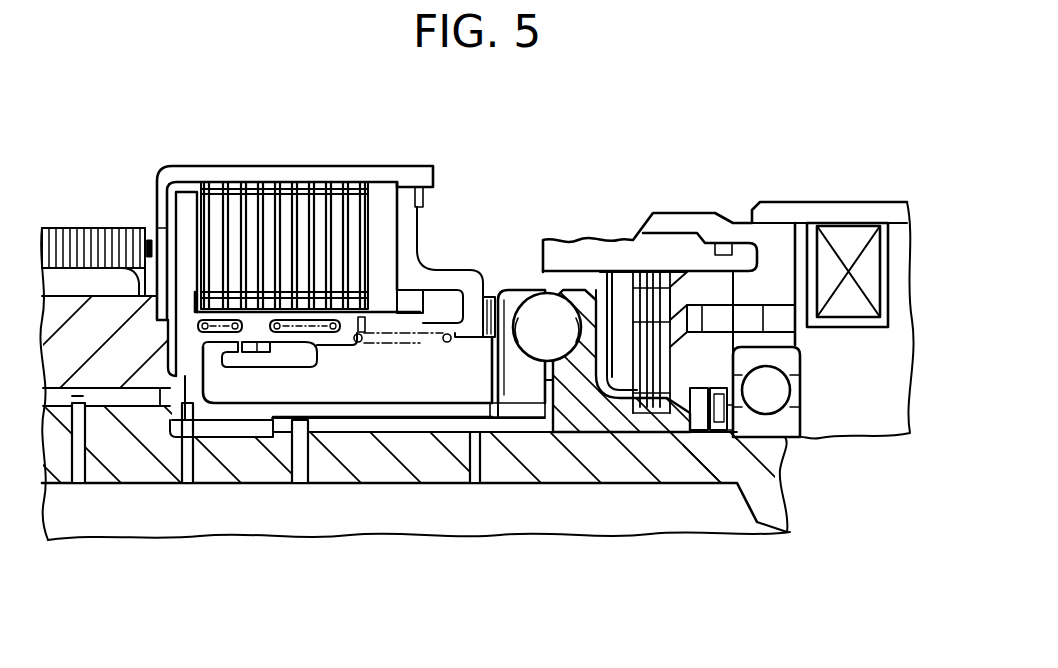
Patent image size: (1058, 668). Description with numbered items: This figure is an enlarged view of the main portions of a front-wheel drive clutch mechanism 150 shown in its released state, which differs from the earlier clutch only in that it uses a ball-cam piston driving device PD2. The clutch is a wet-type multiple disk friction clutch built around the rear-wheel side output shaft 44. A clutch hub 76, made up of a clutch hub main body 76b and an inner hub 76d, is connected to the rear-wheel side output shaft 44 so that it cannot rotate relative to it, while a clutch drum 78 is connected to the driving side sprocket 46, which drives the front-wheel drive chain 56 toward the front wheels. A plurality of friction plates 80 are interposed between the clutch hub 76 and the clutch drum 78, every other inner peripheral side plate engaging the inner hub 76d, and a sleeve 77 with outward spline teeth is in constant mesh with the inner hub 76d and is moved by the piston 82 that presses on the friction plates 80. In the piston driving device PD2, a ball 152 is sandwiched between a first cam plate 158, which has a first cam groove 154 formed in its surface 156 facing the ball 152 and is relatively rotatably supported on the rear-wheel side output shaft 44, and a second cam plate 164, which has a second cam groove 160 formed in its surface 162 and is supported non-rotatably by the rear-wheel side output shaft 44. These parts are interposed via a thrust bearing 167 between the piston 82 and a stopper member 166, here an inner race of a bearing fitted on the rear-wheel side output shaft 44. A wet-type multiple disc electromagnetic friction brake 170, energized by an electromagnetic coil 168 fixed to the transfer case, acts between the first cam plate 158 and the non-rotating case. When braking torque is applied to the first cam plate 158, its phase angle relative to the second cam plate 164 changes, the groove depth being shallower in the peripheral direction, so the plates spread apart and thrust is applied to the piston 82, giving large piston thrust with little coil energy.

The front-wheel drive clutch mechanism 150 is at (237, 96).
The front-wheel drive chain 56 is at (85, 228).
The clutch drum 78 is at (290, 172).
The friction plates 80 is at (368, 218).
The piston 82 is at (420, 283).
The thrust bearing 167 is at (489, 298).
The second cam plate 164 is at (517, 297).
The ball 152 is at (538, 313).
The first cam plate 158 is at (581, 298).
The electromagnetic friction brake 170 is at (650, 198).
The piston driving device PD2 is at (748, 152).
The electromagnetic coil 168 is at (850, 232).
The sleeve 77 is at (318, 361).
The driving side sprocket 46 is at (100, 372).
The rear-wheel side output shaft 44 is at (130, 470).
The clutch hub main body 76b is at (168, 375).
The clutch hub 76 is at (235, 383).
The inner hub 76d is at (258, 327).
The second cam groove 160 is at (523, 362).
The surface 162 is at (567, 362).
The surface 156 is at (607, 360).
The first cam groove 154 is at (613, 392).
The stopper member 166 is at (778, 432).